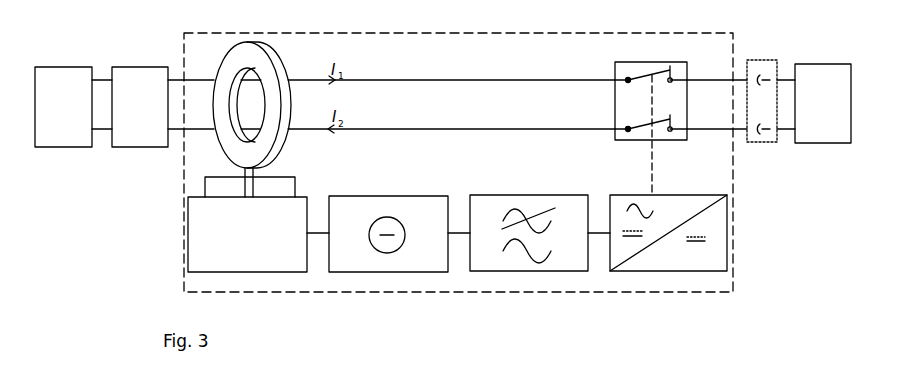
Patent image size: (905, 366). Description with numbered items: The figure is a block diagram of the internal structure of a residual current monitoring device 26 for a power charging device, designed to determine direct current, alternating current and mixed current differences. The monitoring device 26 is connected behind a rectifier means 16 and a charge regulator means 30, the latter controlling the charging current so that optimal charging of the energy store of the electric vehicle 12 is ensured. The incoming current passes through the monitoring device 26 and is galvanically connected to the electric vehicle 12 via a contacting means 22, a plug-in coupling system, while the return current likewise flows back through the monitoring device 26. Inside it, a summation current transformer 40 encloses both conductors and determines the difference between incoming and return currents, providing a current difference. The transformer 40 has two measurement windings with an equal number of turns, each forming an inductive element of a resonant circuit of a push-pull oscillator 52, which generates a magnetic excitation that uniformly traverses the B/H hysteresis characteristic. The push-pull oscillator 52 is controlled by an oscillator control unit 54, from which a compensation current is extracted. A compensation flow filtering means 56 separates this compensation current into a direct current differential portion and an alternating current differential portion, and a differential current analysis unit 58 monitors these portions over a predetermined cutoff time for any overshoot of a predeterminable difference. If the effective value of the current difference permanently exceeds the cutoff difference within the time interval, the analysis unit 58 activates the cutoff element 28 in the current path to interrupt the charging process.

The electric vehicle 12 is at (813, 114).
The rectifier means 16 is at (54, 122).
The contacting means 22 is at (763, 60).
The residual current monitoring device 26 is at (450, 33).
The cutoff element 28 is at (632, 140).
The charge regulator means 30 is at (130, 122).
The summation current transformer 40 is at (282, 62).
The push-pull oscillator 52 is at (243, 238).
The oscillator control unit 54 is at (382, 196).
The compensation flow filtering means 56 is at (510, 195).
The differential current analysis unit 58 is at (673, 194).